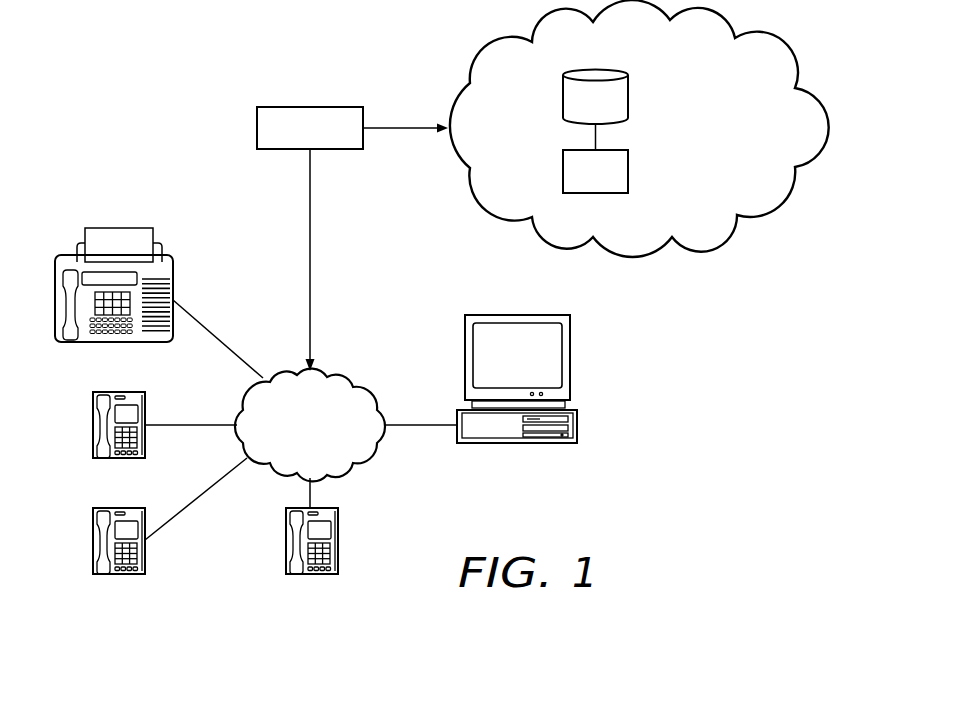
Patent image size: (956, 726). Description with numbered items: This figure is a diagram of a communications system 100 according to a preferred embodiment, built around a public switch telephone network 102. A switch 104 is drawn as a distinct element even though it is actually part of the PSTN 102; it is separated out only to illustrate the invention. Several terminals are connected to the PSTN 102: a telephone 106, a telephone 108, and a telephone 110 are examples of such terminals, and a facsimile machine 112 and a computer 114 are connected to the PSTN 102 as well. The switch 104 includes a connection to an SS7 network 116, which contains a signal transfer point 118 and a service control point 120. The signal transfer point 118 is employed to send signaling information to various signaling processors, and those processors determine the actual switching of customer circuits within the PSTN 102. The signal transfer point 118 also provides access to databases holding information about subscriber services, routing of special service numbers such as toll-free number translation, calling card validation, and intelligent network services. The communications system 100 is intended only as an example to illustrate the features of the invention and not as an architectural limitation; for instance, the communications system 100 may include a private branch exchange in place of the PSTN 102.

The communications system 100 is at (137, 110).
The public switch telephone network 102 is at (330, 458).
The switch 104 is at (257, 128).
The telephone 106 is at (93, 427).
The telephone 108 is at (93, 542).
The telephone 110 is at (286, 542).
The facsimile machine 112 is at (175, 272).
The computer 114 is at (578, 425).
The SS7 network 116 is at (733, 184).
The signal transfer point 118 is at (563, 170).
The service control point 120 is at (628, 88).